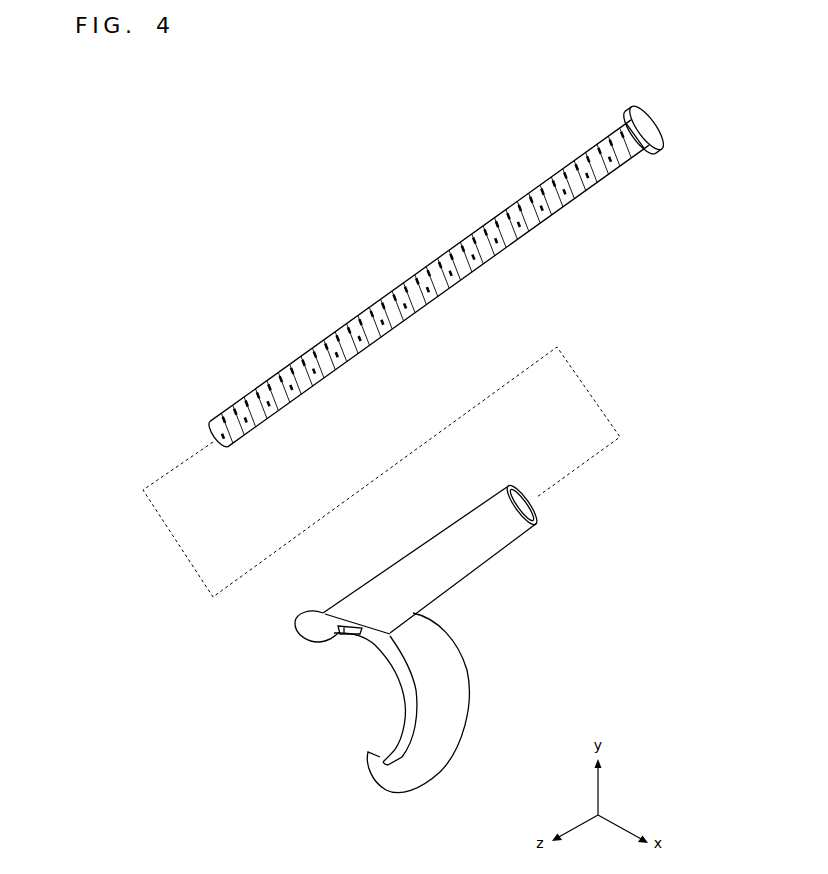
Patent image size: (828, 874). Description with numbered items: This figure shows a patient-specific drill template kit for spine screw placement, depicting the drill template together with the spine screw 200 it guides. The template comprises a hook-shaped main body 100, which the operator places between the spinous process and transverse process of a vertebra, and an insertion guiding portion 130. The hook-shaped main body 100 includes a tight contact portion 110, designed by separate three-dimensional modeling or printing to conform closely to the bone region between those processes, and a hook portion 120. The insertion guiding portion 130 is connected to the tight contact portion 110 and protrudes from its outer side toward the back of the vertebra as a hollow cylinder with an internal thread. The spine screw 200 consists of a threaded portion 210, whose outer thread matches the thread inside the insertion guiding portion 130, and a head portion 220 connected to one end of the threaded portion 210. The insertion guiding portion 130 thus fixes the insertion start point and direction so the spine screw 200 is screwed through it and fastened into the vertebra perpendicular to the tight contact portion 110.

The hook-shaped main body 100 is at (488, 698).
The tight contact portion 110 is at (400, 683).
The hook portion 120 is at (383, 770).
The insertion guiding portion 130 is at (463, 568).
The spine screw 200 is at (552, 97).
The threaded portion 210 is at (448, 250).
The head portion 220 is at (628, 120).